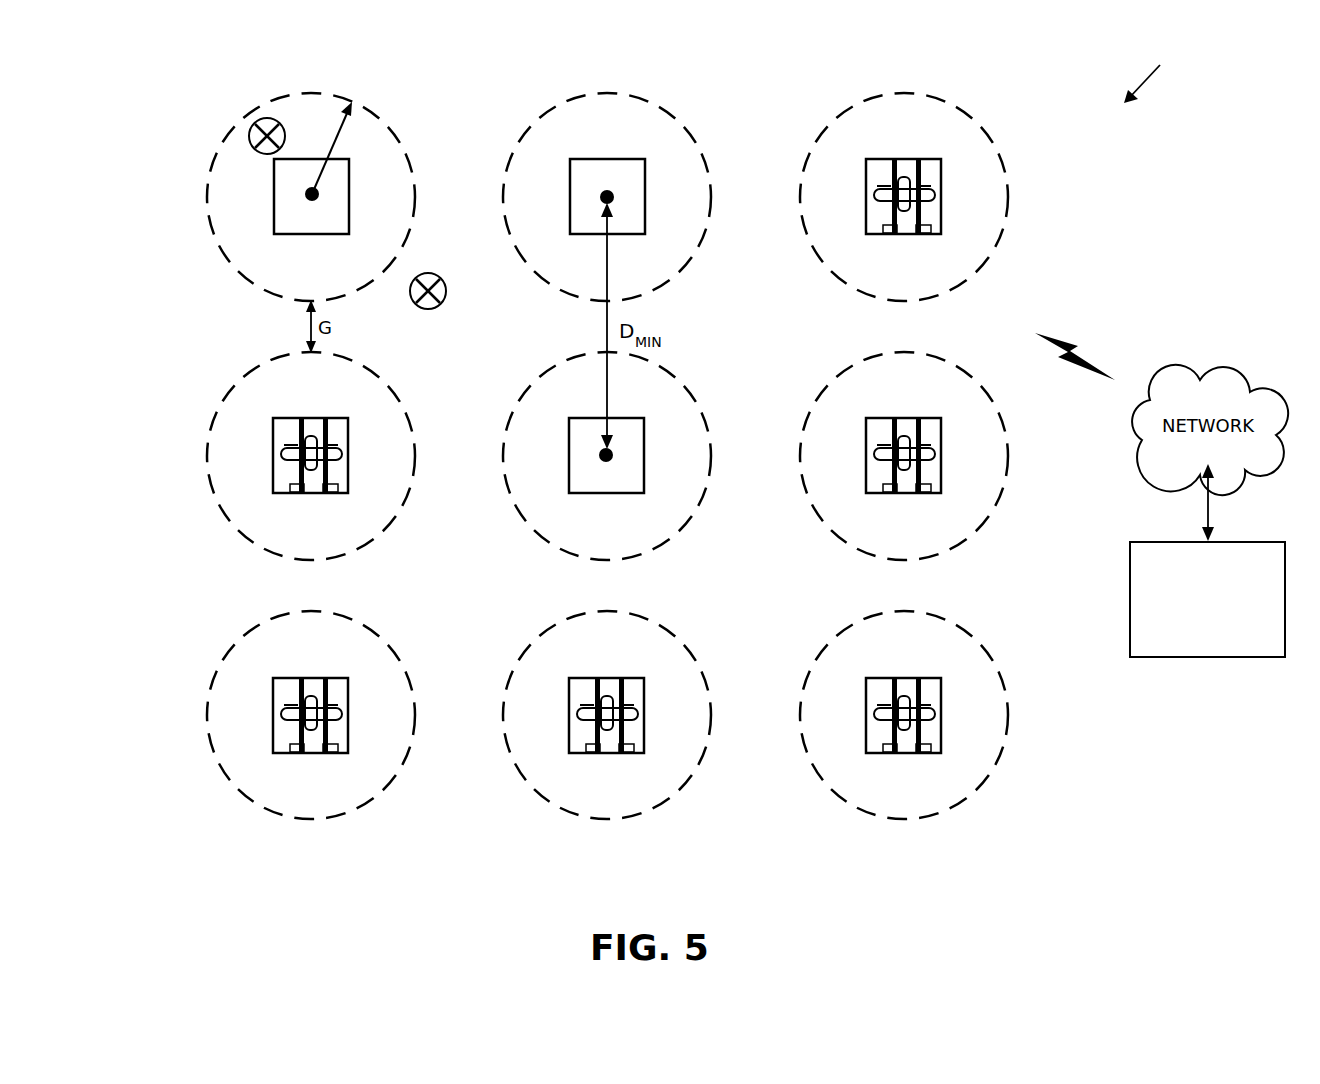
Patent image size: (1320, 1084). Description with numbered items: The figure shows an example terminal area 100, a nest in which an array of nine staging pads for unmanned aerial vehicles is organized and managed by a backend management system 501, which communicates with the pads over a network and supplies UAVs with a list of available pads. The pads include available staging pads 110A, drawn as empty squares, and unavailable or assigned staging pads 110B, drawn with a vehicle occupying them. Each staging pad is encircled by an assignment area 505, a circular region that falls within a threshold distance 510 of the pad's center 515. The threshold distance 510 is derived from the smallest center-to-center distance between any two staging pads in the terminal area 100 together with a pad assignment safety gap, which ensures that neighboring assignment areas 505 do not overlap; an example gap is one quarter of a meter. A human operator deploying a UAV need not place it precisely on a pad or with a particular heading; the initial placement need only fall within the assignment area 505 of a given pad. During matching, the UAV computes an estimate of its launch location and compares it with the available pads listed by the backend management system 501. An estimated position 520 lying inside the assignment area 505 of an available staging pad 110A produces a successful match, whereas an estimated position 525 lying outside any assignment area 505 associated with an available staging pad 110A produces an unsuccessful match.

The terminal area 100 is at (1156, 73).
The backend management system 501 is at (1207, 599).
The assignment area 505 is at (393, 126).
The threshold distance 510 is at (337, 132).
The center 515 is at (320, 195).
The estimated position 520 is at (249, 136).
The estimated position 525 is at (430, 310).
The available staging pad 110A is at (275, 205).
The unavailable/assigned staging pad 110B is at (275, 475).